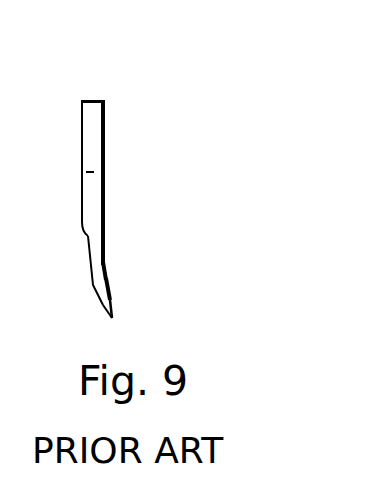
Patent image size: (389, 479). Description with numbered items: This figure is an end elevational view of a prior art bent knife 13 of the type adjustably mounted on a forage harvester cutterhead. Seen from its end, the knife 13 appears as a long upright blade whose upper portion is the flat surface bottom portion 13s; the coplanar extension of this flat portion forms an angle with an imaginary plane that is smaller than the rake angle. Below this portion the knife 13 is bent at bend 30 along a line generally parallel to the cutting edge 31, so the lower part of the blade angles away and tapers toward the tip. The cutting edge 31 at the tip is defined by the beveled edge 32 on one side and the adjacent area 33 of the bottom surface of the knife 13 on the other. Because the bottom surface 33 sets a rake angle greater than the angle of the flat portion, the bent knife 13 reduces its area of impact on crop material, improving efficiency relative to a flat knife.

The knife 13 is at (113, 136).
The flat surface bottom portion 13s is at (105, 166).
The bend 30 is at (106, 267).
The cutting edge 31 is at (110, 321).
The beveled edge 32 is at (99, 290).
The adjacent area of bottom surface 33 is at (108, 291).